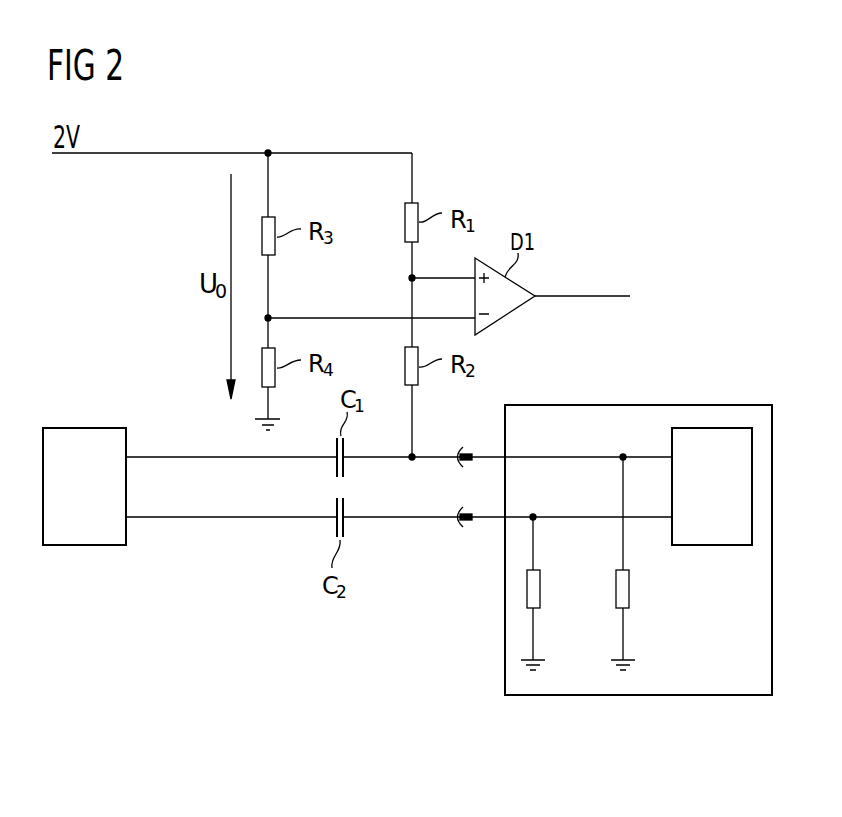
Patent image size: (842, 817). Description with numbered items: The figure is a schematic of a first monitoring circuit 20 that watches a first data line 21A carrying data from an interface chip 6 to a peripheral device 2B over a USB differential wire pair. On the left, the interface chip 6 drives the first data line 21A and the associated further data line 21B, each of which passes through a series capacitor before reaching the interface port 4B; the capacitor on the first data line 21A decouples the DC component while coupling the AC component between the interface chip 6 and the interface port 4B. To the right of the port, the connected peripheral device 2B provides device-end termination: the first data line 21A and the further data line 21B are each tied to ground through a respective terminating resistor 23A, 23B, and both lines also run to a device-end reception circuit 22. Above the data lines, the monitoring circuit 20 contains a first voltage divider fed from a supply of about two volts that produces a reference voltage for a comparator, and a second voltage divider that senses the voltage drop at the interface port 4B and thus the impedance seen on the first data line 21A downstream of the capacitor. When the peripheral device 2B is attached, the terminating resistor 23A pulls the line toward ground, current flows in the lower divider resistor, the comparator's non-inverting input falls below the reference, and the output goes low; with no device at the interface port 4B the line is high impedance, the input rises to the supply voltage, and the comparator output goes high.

The first monitoring circuit 20 is at (640, 142).
The interface chip 6 is at (83, 546).
The first data line 21A is at (188, 455).
The further data line 21B is at (182, 520).
The interface port 4B is at (452, 548).
The peripheral device 2B is at (638, 404).
The device-end reception circuit 22 is at (710, 546).
The terminating resistor 23A is at (630, 589).
The terminating resistor 23B is at (541, 589).